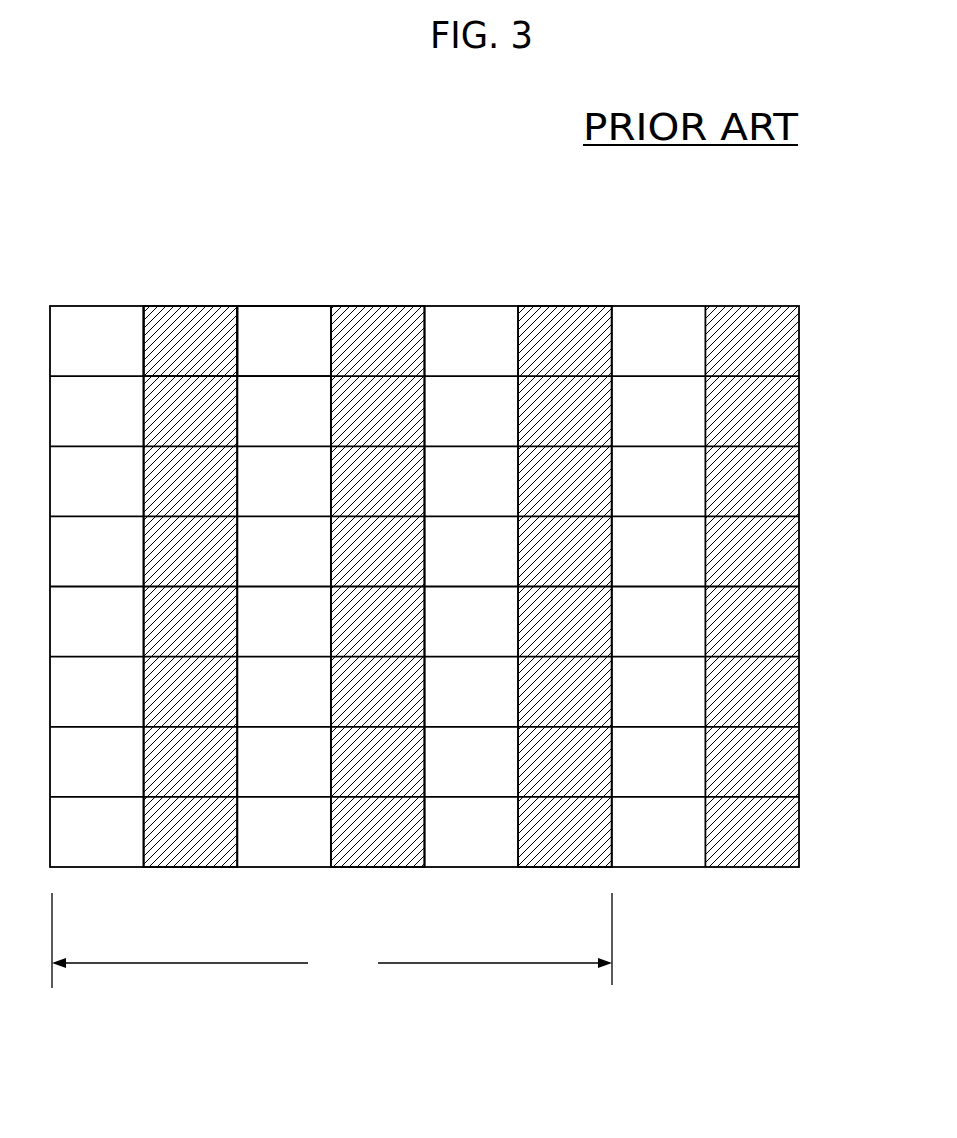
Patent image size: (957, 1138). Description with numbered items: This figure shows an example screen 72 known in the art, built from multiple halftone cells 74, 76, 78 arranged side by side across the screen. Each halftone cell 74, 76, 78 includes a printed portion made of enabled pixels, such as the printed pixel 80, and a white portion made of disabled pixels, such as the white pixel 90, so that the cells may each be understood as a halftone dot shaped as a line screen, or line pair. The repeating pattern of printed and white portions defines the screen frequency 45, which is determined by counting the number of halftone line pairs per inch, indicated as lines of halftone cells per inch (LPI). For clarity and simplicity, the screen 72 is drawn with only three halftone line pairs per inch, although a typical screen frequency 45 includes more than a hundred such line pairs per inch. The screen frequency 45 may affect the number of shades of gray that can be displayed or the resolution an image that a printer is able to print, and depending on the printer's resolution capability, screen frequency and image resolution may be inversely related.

The screen 72 is at (136, 156).
The halftone cell 74 is at (155, 287).
The halftone cell 76 is at (396, 287).
The halftone cell 78 is at (578, 288).
The printed pixel 80 is at (192, 328).
The white pixel 90 is at (283, 328).
The screen frequency 45 is at (353, 986).